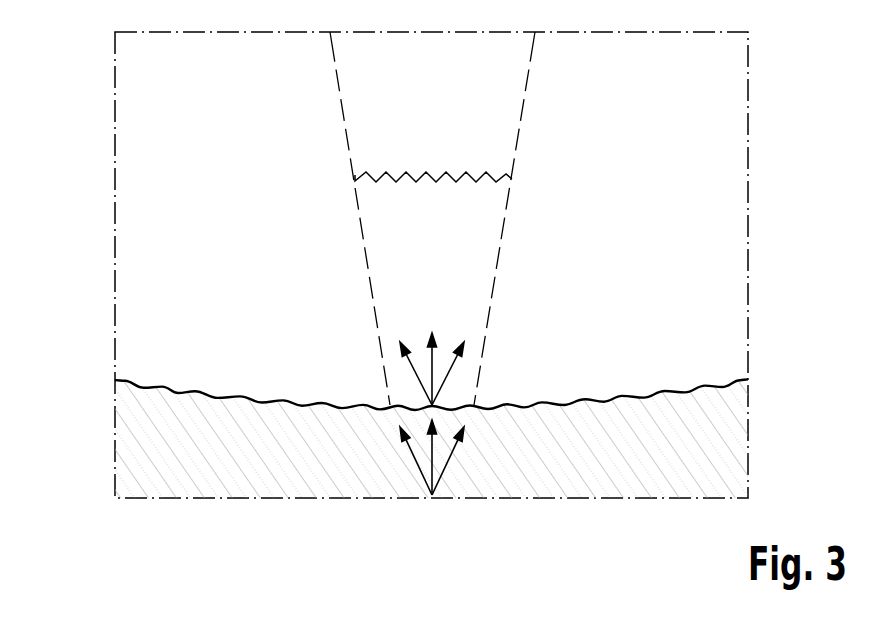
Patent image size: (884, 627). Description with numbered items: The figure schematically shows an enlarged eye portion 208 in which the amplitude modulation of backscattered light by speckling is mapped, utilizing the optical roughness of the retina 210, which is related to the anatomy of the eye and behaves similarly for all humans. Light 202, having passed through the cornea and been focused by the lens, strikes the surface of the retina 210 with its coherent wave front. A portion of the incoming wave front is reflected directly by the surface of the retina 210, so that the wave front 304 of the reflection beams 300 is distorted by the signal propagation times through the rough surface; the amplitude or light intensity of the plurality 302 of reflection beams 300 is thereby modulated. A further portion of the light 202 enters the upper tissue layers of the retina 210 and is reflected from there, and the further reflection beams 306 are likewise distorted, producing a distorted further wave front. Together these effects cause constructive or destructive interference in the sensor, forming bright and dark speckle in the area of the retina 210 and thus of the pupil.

The eye portion 208 is at (115, 70).
The light 202 is at (343, 105).
The wave front 304 is at (439, 175).
The plurality of reflection beams 302 is at (384, 385).
The reflection beam 300 is at (448, 379).
The further reflection beams 306 is at (443, 473).
The retina 210 is at (713, 445).